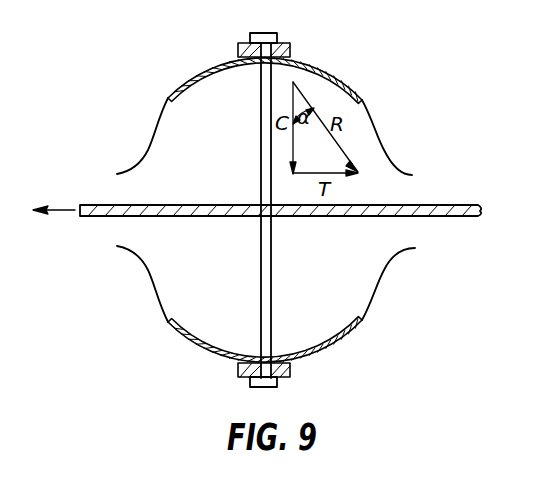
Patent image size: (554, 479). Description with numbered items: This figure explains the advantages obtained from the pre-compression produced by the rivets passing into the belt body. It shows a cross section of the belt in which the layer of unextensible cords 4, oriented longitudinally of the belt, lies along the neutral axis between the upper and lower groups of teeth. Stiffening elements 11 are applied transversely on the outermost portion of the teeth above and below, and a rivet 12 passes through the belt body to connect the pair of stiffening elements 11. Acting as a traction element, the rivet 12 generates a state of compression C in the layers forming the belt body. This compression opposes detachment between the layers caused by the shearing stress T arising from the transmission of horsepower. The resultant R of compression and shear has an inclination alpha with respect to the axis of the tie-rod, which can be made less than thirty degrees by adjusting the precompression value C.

The unextensible cords 4 is at (433, 205).
The stiffening elements 11 is at (313, 66).
The rivets 12 is at (260, 138).